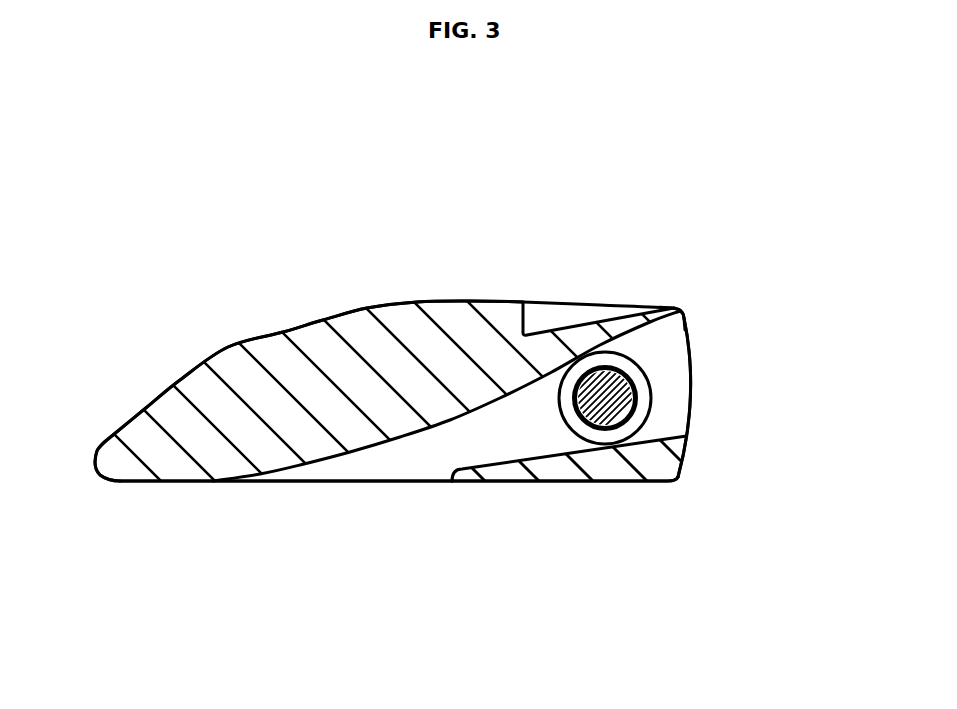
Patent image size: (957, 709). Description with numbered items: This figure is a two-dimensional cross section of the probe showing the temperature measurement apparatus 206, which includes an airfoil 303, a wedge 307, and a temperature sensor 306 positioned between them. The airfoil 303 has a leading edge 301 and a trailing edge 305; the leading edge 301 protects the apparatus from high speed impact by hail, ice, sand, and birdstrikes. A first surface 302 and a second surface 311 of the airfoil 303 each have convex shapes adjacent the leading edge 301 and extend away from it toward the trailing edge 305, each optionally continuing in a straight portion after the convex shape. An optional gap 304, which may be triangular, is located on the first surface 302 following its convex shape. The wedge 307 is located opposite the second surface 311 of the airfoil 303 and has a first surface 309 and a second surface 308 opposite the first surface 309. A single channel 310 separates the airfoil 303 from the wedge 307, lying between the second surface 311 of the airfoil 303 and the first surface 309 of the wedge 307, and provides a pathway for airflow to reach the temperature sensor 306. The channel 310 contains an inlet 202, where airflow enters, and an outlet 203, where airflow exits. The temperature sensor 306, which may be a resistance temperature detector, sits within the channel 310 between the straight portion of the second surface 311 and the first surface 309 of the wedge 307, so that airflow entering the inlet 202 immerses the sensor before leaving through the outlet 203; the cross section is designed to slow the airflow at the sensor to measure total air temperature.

The temperature measurement apparatus 206 is at (275, 125).
The leading edge 301 is at (80, 472).
The first surface 302 is at (223, 336).
The airfoil 303 is at (354, 324).
The gap 304 is at (548, 306).
The trailing edge 305 is at (690, 302).
The outlet 203 is at (703, 329).
The temperature sensor 306 is at (667, 392).
The wedge 307 is at (667, 463).
The second surface 308 is at (643, 496).
The first surface 309 is at (547, 469).
The single channel 310 is at (408, 476).
The second surface 311 is at (321, 477).
The inlet 202 is at (351, 497).